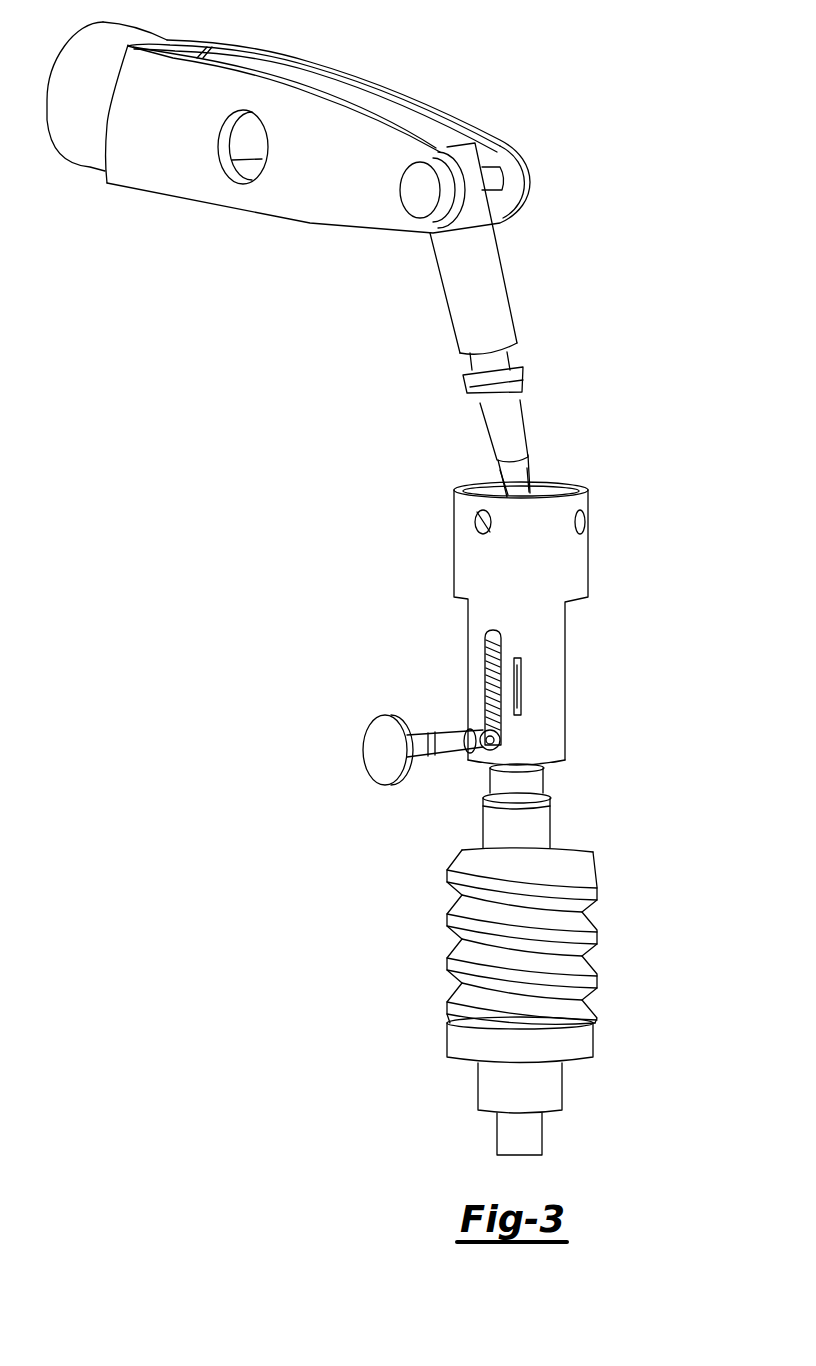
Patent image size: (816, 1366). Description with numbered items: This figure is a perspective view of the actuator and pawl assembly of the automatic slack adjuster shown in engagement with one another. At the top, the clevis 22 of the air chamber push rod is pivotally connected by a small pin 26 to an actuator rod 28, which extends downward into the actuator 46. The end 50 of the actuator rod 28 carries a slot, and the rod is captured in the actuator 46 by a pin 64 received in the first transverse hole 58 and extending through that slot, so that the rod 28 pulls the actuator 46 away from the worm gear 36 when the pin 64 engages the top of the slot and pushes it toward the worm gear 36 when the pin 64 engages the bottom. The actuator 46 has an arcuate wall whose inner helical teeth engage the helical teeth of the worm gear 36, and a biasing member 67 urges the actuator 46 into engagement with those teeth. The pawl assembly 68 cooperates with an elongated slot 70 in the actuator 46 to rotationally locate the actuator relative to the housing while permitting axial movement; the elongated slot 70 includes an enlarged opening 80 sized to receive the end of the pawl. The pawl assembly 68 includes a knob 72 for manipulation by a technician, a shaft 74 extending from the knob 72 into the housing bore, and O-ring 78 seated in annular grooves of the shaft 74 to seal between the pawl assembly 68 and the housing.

The clevis 22 is at (415, 118).
The small pin 26 is at (415, 197).
The actuator rod 28 is at (487, 270).
The worm gear 36 is at (575, 917).
The actuator 46 is at (580, 548).
The end of the actuator rod 50 is at (520, 473).
The first transverse hole 58 is at (477, 517).
The pin 64 is at (480, 527).
The biasing member 67 is at (520, 680).
The pawl assembly 68 is at (352, 691).
The elongated slot 70 is at (493, 630).
The knob 72 is at (373, 753).
The shaft 74 is at (452, 757).
The O-ring 78 is at (468, 735).
The enlarged opening 80 is at (490, 750).